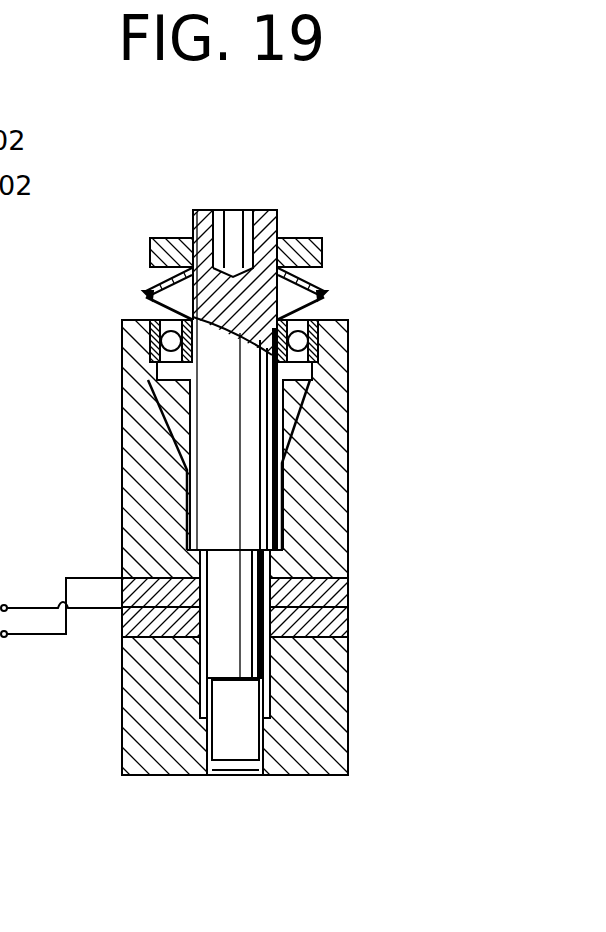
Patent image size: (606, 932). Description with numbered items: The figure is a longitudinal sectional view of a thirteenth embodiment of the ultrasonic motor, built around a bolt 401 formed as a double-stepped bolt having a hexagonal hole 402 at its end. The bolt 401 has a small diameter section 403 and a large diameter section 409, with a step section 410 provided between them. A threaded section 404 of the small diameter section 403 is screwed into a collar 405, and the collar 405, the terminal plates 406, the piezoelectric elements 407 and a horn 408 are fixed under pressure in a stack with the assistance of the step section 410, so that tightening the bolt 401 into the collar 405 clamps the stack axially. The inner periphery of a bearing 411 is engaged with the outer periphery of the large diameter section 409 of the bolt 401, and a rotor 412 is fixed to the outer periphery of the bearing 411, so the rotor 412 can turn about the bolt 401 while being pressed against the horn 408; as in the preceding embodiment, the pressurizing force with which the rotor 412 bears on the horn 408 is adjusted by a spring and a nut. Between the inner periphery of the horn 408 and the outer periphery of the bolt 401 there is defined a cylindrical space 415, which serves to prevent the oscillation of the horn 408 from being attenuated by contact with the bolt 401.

The bolt 401 is at (258, 517).
The hexagonal hole 402 is at (235, 215).
The small diameter section 403 is at (267, 663).
The threaded section 404 is at (235, 752).
The collar 405 is at (328, 763).
The terminal plates 406 is at (348, 585).
The piezoelectric elements 407 is at (130, 608).
The horn 408 is at (348, 418).
The large diameter section 409 is at (203, 430).
The step section 410 is at (250, 557).
The bearing 411 is at (150, 340).
The rotor 412 is at (348, 342).
The cylindrical space 415 is at (187, 500).